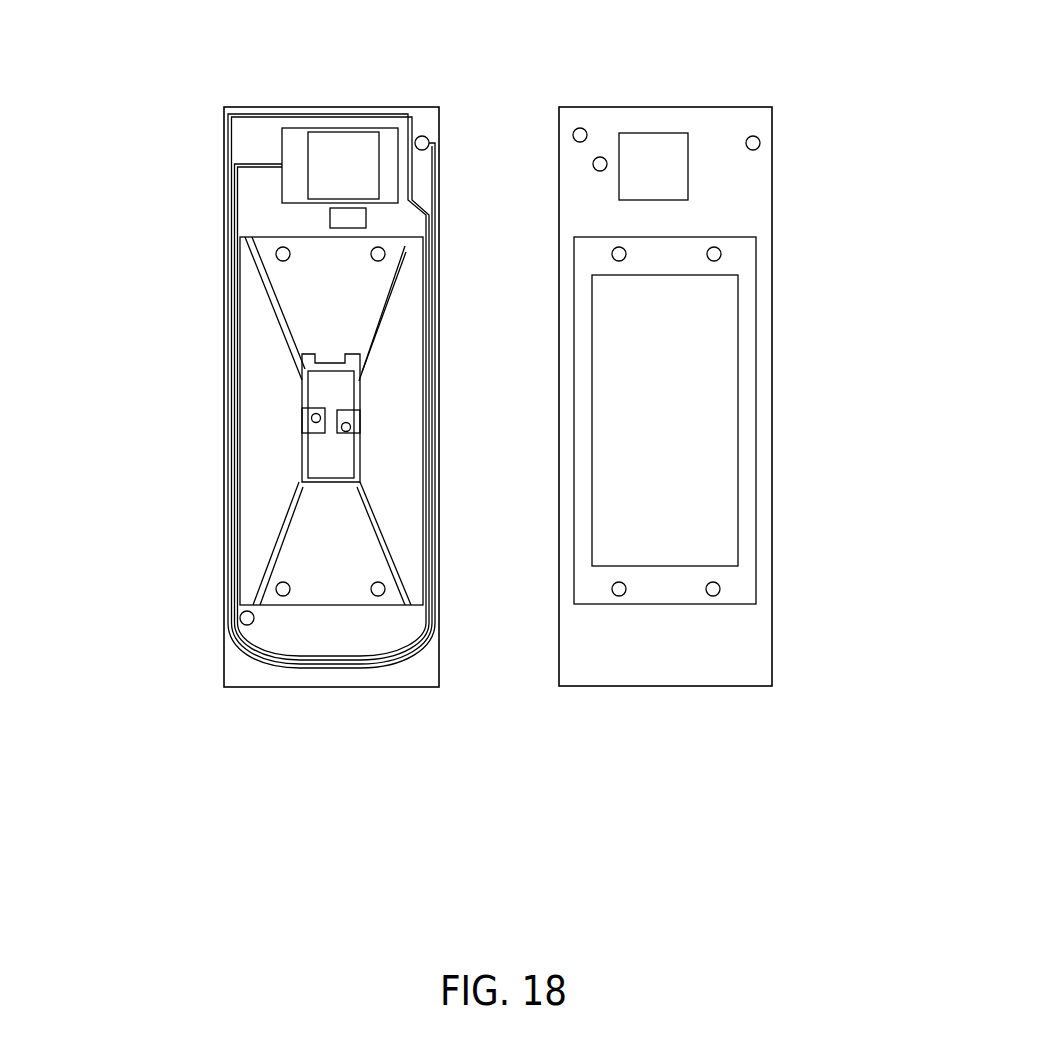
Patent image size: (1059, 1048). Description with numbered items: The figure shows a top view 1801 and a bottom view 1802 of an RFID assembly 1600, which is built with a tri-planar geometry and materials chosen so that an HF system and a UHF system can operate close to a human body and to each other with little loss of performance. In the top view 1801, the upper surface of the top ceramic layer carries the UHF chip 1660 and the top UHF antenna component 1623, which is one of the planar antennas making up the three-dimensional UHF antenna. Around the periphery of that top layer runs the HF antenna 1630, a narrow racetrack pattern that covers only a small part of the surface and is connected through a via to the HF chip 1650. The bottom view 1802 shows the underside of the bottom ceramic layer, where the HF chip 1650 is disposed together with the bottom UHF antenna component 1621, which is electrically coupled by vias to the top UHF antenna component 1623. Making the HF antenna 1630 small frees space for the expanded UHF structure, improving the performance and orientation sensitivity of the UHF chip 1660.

The RFID assembly 1600 is at (153, 153).
The top view 1801 is at (358, 698).
The bottom view 1802 is at (718, 697).
The bottom UHF antenna component 1621 is at (692, 406).
The top UHF antenna component 1623 is at (356, 311).
The HF antenna 1630 is at (232, 583).
The HF chip 1650 is at (655, 159).
The UHF chip 1660 is at (315, 458).